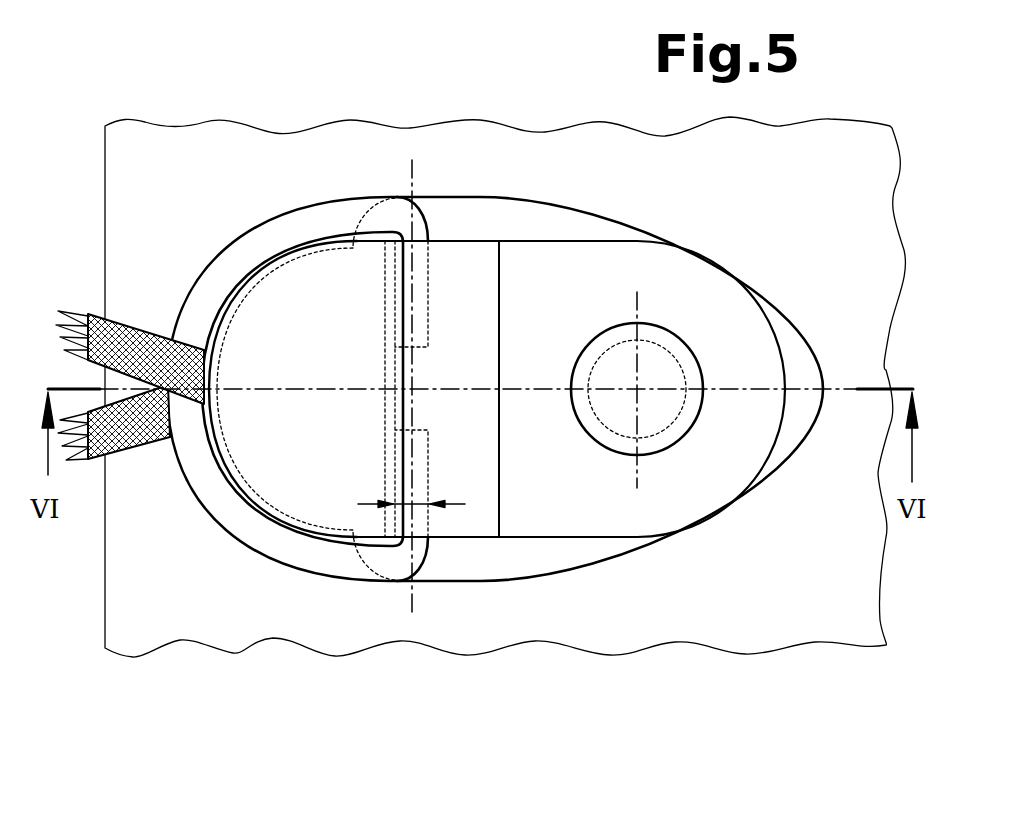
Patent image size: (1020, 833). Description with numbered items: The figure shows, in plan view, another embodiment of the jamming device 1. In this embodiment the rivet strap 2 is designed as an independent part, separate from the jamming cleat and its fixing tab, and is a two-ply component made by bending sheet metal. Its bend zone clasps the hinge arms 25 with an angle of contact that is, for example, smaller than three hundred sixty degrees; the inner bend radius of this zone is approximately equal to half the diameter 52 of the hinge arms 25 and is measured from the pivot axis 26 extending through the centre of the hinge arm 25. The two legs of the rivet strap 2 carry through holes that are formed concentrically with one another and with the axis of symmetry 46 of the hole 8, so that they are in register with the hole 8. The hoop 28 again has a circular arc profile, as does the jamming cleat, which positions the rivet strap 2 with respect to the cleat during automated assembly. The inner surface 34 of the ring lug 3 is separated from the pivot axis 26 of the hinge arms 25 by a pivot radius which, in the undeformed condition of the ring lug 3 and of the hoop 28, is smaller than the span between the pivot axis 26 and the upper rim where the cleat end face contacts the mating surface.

The jamming device 1 is at (370, 135).
The rivet strap 2 is at (553, 608).
The ring lug 3 is at (249, 180).
The hole 8 is at (666, 420).
The hinge arms 25 is at (420, 280).
The pivot axis 26 is at (408, 605).
The hoop 28 is at (200, 302).
The inner surface 34 is at (248, 296).
The axis of symmetry 46 is at (638, 388).
The diameter 52 is at (459, 508).